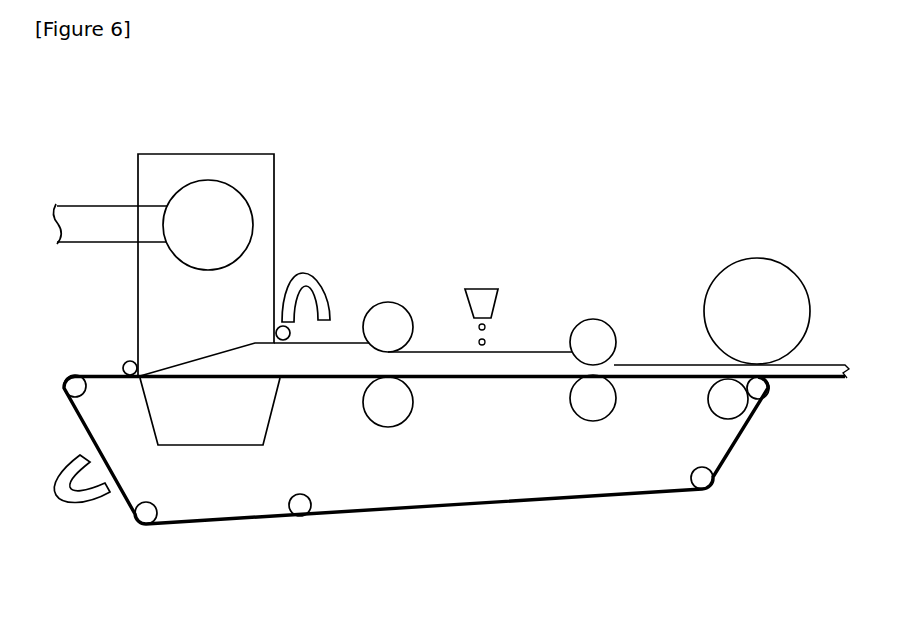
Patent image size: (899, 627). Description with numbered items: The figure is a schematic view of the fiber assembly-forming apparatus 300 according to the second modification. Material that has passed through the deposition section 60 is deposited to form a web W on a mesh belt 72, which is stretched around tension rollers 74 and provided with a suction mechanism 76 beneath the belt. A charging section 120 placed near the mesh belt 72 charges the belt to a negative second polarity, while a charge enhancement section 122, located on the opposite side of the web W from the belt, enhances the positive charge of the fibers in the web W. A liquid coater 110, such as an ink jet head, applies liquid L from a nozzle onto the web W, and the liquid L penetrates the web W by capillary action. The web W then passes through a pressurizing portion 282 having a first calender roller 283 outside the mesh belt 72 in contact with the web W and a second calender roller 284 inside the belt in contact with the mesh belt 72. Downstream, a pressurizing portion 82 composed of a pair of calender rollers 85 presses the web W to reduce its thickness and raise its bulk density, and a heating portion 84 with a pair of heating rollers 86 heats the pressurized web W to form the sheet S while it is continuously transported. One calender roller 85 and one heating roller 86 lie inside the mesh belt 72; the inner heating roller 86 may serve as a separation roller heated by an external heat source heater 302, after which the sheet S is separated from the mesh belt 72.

The deposition section 60 is at (290, 132).
The fiber assembly-forming apparatus 300 is at (780, 130).
The mesh belt 72 is at (103, 373).
The tension rollers 74 is at (146, 513).
The suction mechanism 76 is at (212, 428).
The charging section 120 is at (72, 503).
The charge enhancement section 122 is at (303, 273).
The web W is at (346, 360).
The pressurizing portion 282 is at (402, 288).
The calender roller 283 is at (388, 325).
The calender roller 284 is at (388, 405).
The liquid coater 110 is at (481, 300).
The liquid L is at (487, 328).
The pressurizing portion 82 is at (597, 310).
The calender rollers 85 is at (580, 338).
The heating portion 84 is at (752, 252).
The heating rollers 86 is at (780, 283).
The external heat source heater 302 is at (728, 401).
The sheet S is at (833, 363).